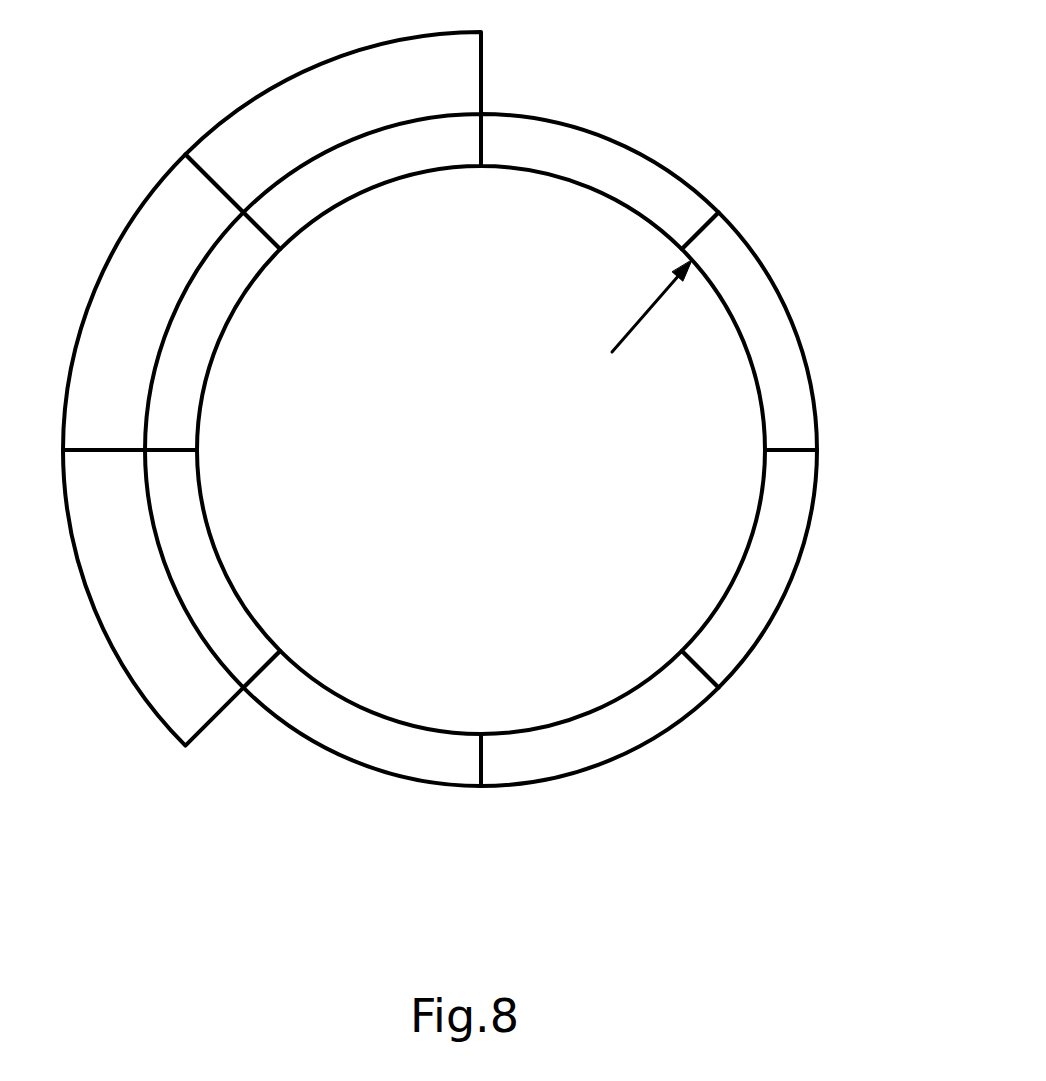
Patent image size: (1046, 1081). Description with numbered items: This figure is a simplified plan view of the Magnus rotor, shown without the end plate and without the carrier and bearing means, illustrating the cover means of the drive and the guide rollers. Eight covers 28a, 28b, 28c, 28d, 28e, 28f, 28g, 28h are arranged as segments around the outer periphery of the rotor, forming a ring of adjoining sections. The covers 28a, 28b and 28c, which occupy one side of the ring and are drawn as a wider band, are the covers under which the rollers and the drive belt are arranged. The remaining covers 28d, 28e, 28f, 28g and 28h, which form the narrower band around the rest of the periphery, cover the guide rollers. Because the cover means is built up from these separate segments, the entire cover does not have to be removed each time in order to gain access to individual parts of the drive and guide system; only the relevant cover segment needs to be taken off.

The cover 28a is at (171, 598).
The cover 28b is at (171, 302).
The cover 28c is at (333, 140).
The cover 28d is at (610, 162).
The cover 28e is at (772, 338).
The cover 28f is at (765, 595).
The cover 28g is at (612, 735).
The cover 28h is at (357, 733).